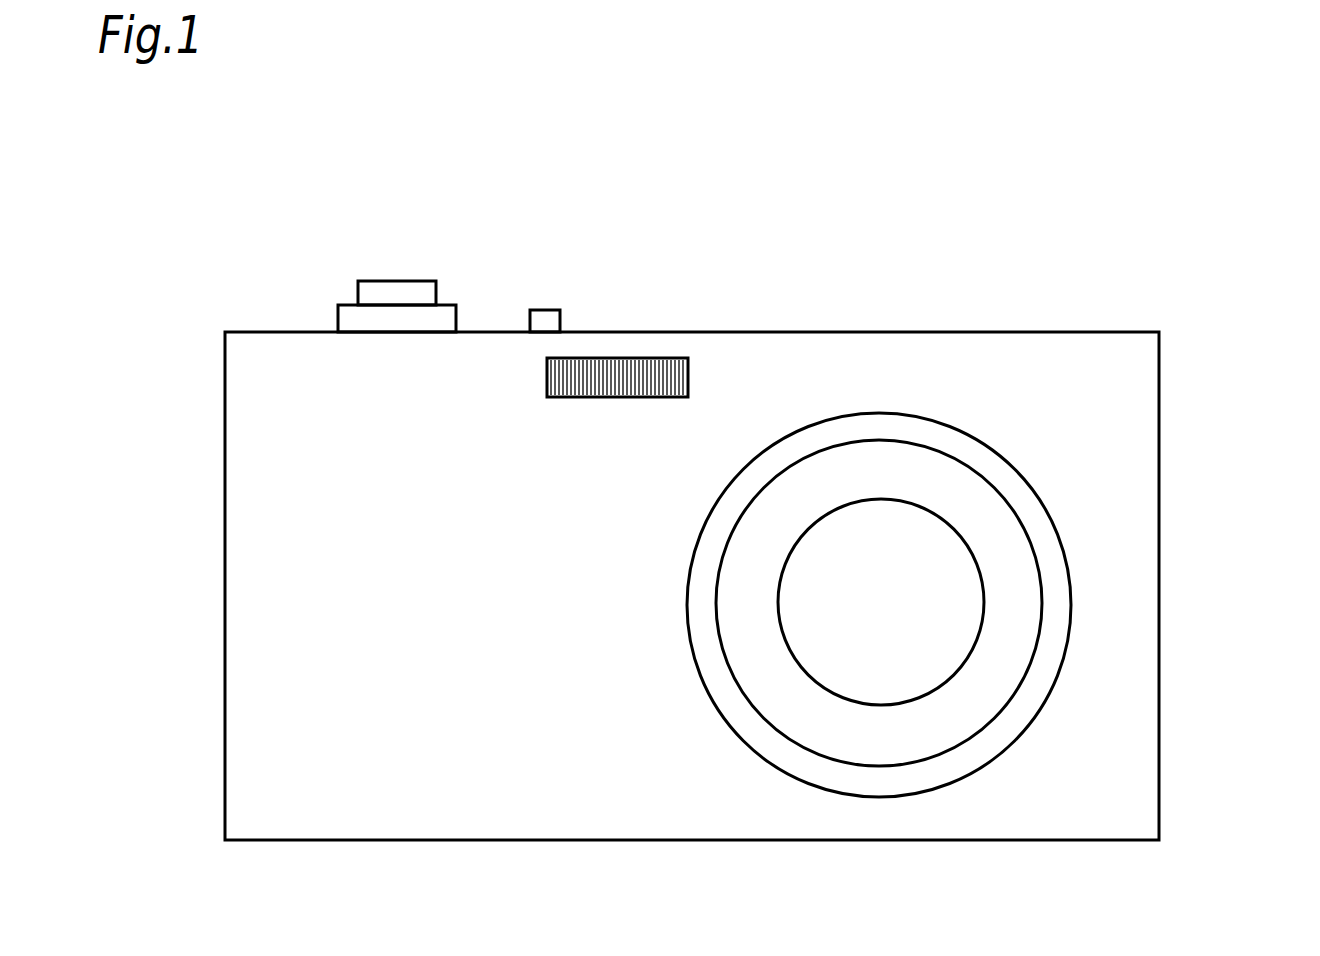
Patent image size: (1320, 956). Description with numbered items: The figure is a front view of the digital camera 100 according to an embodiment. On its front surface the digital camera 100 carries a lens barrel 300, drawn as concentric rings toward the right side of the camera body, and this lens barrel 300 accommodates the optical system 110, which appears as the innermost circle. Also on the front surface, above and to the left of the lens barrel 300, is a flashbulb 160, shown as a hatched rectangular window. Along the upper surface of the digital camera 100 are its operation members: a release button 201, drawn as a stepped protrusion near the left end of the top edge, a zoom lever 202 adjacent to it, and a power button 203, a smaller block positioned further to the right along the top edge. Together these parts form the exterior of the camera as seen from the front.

The digital camera 100 is at (296, 118).
The optical system 110 is at (930, 625).
The flashbulb 160 is at (635, 368).
The release button 201 is at (365, 281).
The zoom lever 202 is at (438, 305).
The power button 203 is at (551, 314).
The lens barrel 300 is at (980, 488).